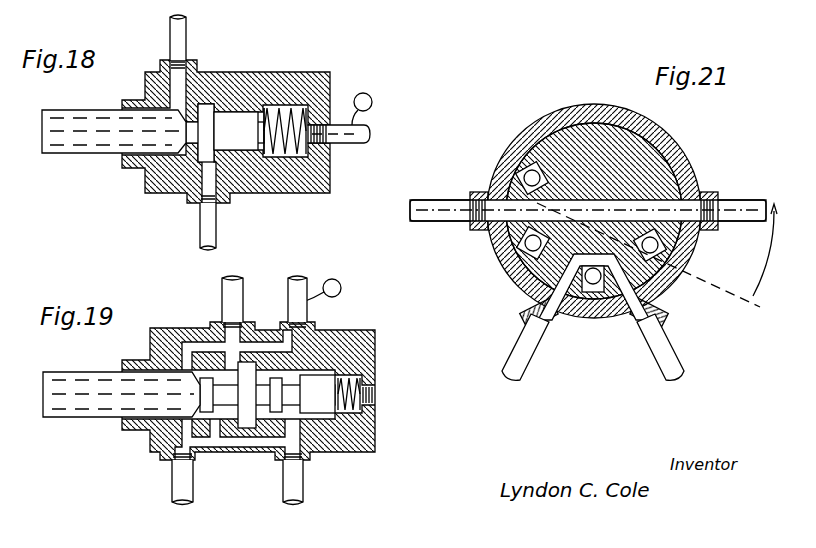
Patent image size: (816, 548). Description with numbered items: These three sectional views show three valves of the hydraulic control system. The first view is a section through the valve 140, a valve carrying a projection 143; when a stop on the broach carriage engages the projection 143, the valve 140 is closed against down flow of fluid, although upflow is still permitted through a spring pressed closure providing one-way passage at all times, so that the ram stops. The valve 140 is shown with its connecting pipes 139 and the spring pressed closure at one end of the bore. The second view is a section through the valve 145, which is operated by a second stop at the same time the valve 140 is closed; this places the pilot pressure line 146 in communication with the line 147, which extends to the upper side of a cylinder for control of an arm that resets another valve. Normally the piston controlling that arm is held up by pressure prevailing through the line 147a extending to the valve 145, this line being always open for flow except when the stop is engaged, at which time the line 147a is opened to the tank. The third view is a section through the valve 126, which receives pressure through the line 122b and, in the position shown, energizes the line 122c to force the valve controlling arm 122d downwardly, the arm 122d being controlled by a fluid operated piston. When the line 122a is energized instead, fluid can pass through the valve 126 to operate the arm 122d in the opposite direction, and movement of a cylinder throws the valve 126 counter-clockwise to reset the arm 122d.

In FIG. 18, the pipe 139 is at (186, 27).
In FIG. 18, the valve 140 is at (252, 72).
In FIG. 18, the projection 143 is at (107, 110).
In FIG. 19, the valve 145 is at (175, 330).
In FIG. 19, the pilot pressure line 146 is at (226, 290).
In FIG. 19, the line 147 is at (300, 487).
In FIG. 19, the line 147a is at (173, 492).
In FIG. 21, the valve 126 is at (675, 153).
In FIG. 21, the line 122a is at (455, 208).
In FIG. 21, the line 122b is at (672, 340).
In FIG. 21, the line 122c is at (510, 360).
In FIG. 21, the valve controlling arm 122d is at (724, 208).